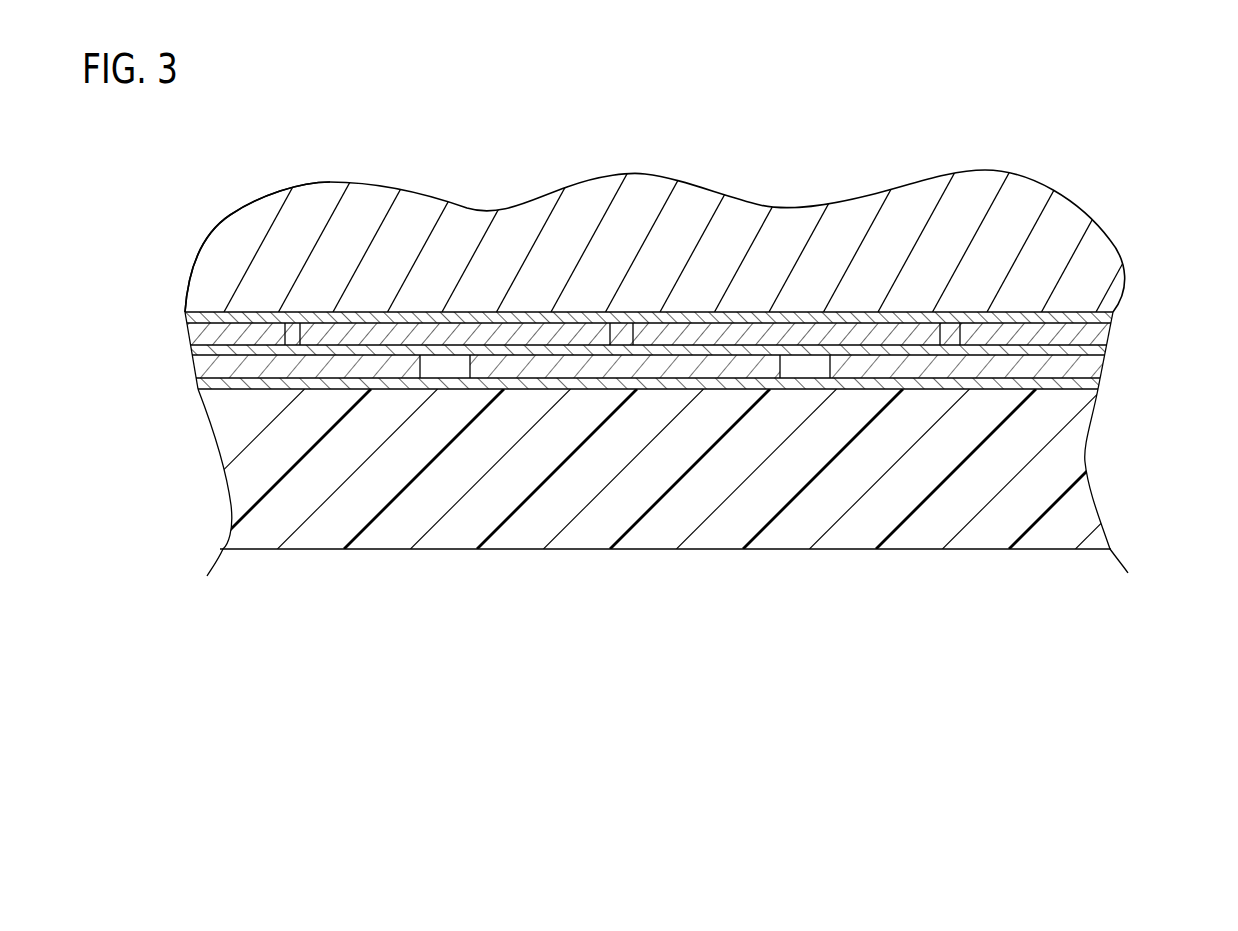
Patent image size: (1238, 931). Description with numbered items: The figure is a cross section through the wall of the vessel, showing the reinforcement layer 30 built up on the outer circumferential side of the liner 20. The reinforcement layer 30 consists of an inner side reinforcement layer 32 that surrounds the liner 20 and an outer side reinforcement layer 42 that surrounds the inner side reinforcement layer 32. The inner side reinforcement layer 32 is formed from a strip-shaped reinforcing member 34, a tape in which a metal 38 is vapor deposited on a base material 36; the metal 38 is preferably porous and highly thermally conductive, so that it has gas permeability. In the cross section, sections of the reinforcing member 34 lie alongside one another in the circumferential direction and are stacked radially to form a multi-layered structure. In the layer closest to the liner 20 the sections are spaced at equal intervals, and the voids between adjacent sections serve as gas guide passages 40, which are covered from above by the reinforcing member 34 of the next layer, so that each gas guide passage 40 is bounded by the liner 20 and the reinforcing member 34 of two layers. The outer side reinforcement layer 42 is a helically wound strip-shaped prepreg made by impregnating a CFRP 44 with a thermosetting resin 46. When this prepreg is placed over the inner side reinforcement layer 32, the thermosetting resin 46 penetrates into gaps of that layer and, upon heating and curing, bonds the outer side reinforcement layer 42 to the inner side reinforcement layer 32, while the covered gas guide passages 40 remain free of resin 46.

The liner 20 is at (228, 440).
The reinforcement layer 30 is at (711, 311).
The inner side reinforcement layer 32 is at (1137, 322).
The reinforcing member 34 is at (318, 142).
The base material 36 is at (282, 340).
The metal 38 is at (226, 335).
The gas guide passages 40 is at (447, 383).
The outer side reinforcement layer 42 is at (1137, 177).
The CFRP 44 is at (208, 275).
The thermosetting resin 46 is at (228, 317).